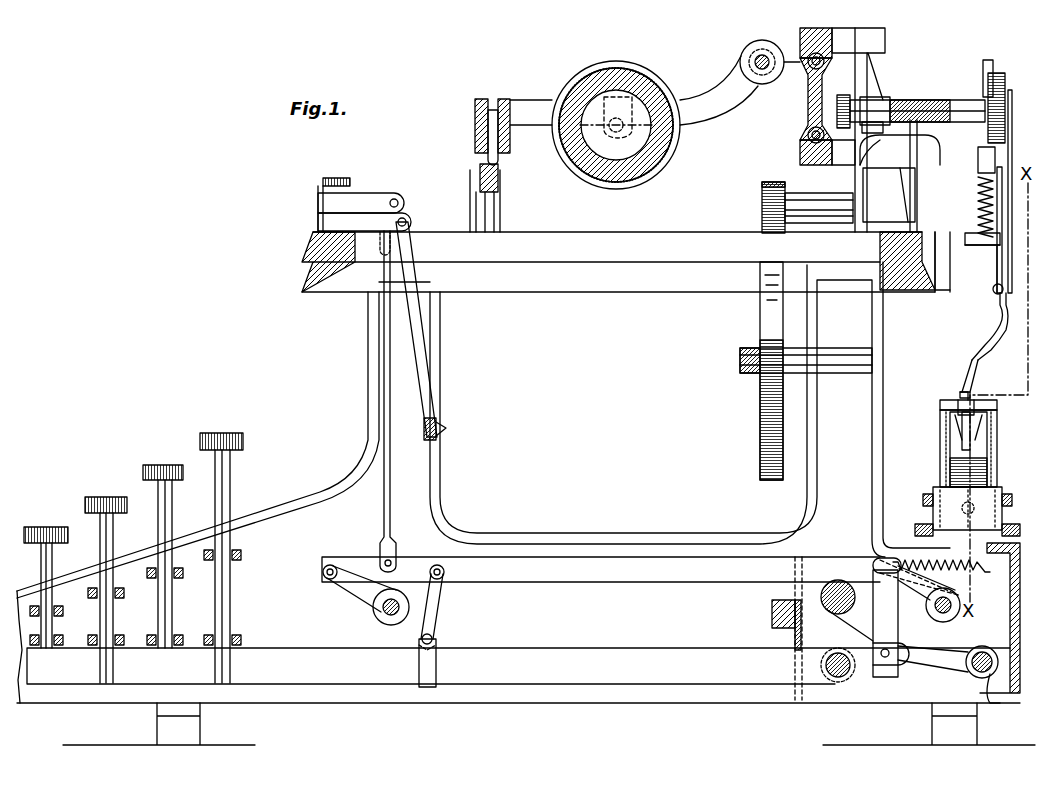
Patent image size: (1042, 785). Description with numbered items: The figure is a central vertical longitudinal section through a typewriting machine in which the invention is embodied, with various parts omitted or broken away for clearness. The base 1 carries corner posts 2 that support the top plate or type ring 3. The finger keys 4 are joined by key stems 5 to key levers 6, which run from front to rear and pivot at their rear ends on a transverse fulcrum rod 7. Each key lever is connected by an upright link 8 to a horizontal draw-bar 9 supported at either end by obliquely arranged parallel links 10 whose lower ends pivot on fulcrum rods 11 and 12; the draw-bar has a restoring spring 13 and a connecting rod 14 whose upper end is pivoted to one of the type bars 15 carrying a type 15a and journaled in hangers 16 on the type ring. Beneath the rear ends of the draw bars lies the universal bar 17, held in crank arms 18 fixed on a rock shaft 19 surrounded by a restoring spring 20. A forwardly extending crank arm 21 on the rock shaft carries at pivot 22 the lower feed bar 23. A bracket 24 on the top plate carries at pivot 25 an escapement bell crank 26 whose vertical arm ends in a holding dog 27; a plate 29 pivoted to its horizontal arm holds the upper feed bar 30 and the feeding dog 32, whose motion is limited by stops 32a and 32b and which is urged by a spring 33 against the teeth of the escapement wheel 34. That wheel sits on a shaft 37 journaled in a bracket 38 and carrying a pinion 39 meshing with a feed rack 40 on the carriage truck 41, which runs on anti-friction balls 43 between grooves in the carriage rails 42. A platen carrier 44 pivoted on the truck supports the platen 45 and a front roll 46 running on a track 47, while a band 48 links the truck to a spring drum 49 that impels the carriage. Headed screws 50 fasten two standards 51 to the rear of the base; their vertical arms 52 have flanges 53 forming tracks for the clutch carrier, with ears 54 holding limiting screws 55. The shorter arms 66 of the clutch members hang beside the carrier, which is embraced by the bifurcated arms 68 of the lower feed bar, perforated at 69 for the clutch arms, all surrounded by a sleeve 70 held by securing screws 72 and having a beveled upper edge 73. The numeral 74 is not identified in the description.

The base 1 is at (688, 704).
The corner posts 2 is at (368, 385).
The top plate or type ring 3 is at (642, 246).
The finger keys 4 is at (217, 436).
The key stems 5 is at (228, 499).
The key levers 6 is at (278, 650).
The fulcrum rod 7 is at (840, 678).
The upright link 8 is at (437, 612).
The draw-bar 9 is at (633, 575).
The parallel links 10 is at (358, 590).
The fulcrum rod 11 is at (392, 622).
The fulcrum rod 12 is at (942, 622).
The restoring spring 13 is at (982, 593).
The connecting rod 14 is at (384, 495).
The type bars 15 is at (420, 325).
The type 15a is at (446, 428).
The hangers 16 is at (367, 192).
The universal bar 17 is at (826, 607).
The crank arms 18 is at (856, 627).
The rock shaft 19 is at (986, 650).
The restoring spring 20 is at (986, 689).
The crank arm 21 is at (927, 662).
The pivot 22 is at (878, 653).
The lower feed bar 23 is at (915, 617).
The bracket 24 is at (938, 258).
The pivot 25 is at (1012, 269).
The escapement bell crank 26 is at (1003, 166).
The holding dog 27 is at (990, 112).
The plate 29 is at (997, 270).
The upper feed bar 30 is at (985, 350).
The feeding dog 32 is at (1000, 158).
The stop 32a is at (980, 172).
The stop 32b is at (985, 253).
The spring 33 is at (980, 203).
The escapement wheel 34 is at (983, 73).
The shaft 37 is at (930, 104).
The bracket 38 is at (887, 104).
The pinion 39 is at (854, 130).
The feed rack 40 is at (850, 92).
The carriage truck 41 is at (808, 100).
The carriage rails 42 is at (800, 36).
The anti-friction balls 43 is at (818, 53).
The platen carrier 44 is at (697, 97).
The platen 45 is at (626, 75).
The front roll 46 is at (493, 110).
The track or way 47 is at (500, 178).
The band 48 is at (779, 187).
The spring drum 49 is at (806, 371).
The headed screws 50 is at (915, 531).
The brackets or standards 51 is at (950, 446).
The vertical arms 52 is at (940, 427).
The flanges 53 is at (950, 466).
The ear or lug 54 is at (952, 400).
The limiting screws 55 is at (966, 392).
The shorter arms 66 is at (990, 412).
The arms 68 is at (970, 437).
The perforations 69 is at (958, 412).
The sleeve 70 is at (1002, 516).
The securing screws 72 is at (923, 500).
The bevel 73 is at (1000, 488).
The cam surface 74 is at (958, 145).